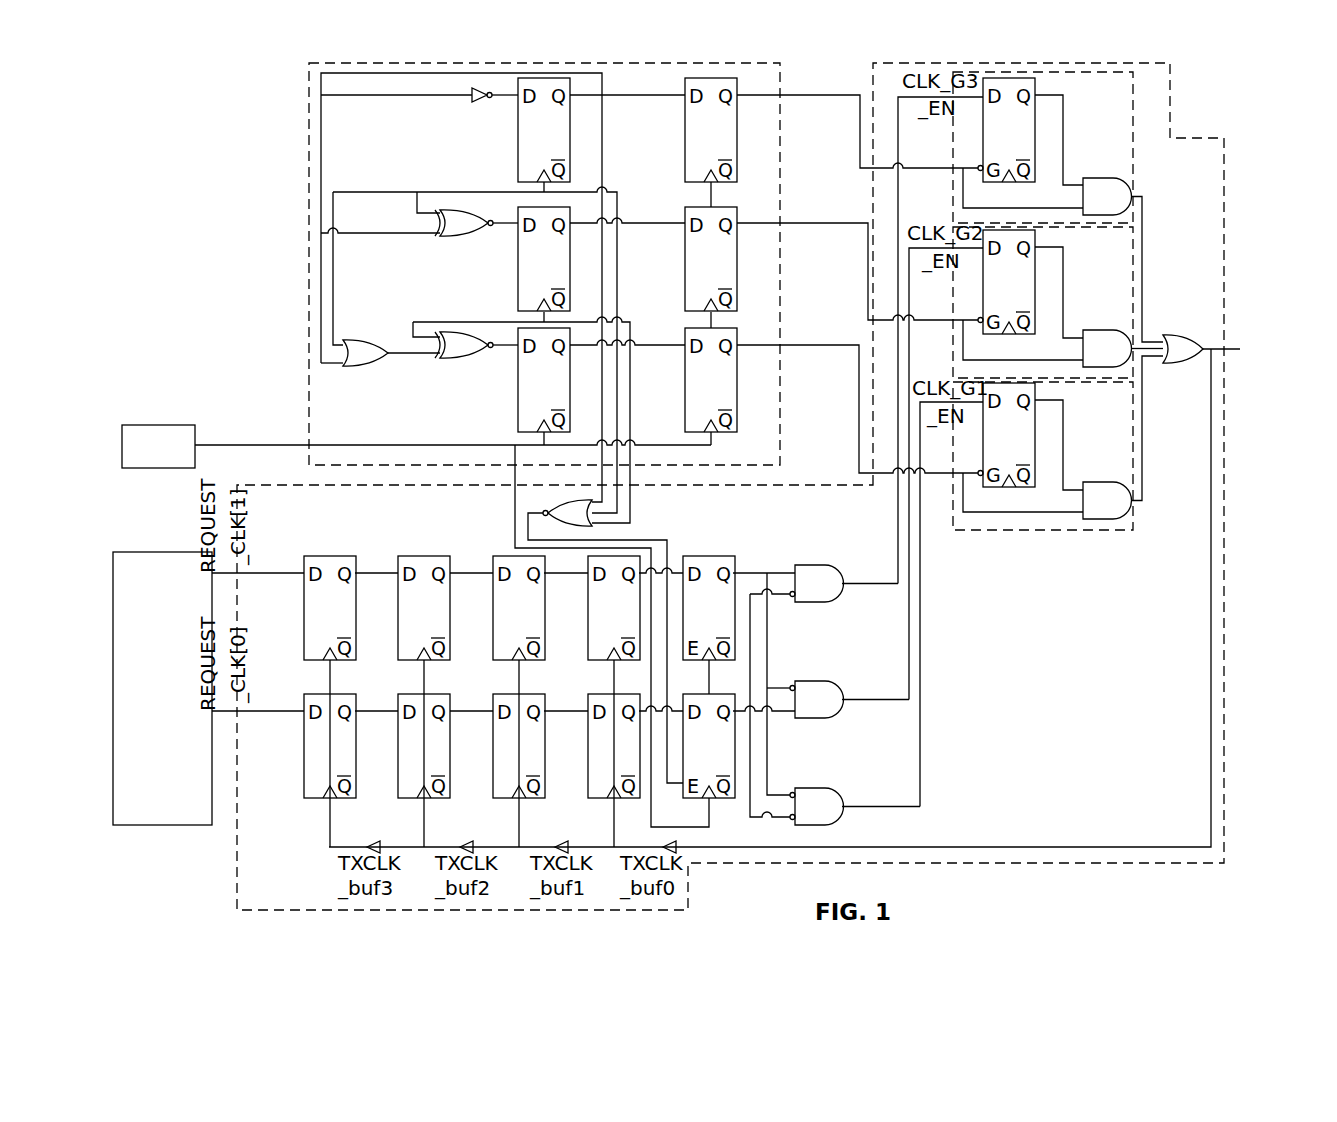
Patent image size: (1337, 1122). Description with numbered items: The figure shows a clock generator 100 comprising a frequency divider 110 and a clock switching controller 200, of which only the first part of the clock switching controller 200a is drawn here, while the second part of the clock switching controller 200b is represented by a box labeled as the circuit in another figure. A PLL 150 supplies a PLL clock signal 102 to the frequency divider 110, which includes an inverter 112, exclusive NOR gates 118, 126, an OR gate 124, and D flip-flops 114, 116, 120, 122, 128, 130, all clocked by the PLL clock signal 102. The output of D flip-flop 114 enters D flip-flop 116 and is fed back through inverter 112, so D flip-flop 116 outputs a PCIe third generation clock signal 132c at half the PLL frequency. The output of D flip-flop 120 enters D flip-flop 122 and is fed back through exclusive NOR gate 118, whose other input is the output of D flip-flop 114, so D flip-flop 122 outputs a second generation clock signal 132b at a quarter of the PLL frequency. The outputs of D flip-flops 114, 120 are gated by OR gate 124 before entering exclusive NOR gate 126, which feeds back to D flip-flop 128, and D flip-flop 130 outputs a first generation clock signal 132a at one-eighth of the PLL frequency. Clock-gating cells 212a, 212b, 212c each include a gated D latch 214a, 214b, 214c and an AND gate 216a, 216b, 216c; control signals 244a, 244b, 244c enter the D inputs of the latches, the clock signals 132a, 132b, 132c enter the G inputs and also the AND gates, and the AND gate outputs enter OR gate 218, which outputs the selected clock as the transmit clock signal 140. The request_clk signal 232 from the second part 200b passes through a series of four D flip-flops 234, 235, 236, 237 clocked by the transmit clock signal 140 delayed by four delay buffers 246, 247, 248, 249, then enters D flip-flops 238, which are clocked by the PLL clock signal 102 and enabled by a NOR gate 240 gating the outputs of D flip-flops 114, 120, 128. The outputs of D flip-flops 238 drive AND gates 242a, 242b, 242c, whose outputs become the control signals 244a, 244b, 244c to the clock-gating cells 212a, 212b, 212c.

The clock generator 100 is at (1316, 91).
The clock switching controller 200 is at (1216, 135).
The first part of the clock switching controller 200a is at (1152, 865).
The second part of the clock switching controller 200b is at (125, 552).
The PLL clock signal 102 is at (370, 445).
The frequency divider 110 is at (309, 238).
The inverter 112 is at (478, 105).
The D flip-flop 114 is at (518, 155).
The D flip-flop 116 is at (685, 155).
The exclusive NOR gate 118 is at (455, 237).
The D flip-flop 120 is at (518, 270).
The D flip-flop 122 is at (685, 270).
The OR gate 124 is at (370, 366).
The exclusive NOR gate 126 is at (470, 359).
The D flip-flop 128 is at (518, 413).
The D flip-flop 130 is at (690, 328).
The PCIe first generation clock signal 132a is at (800, 349).
The PCIe second generation clock signal 132b is at (806, 227).
The PCIe third generation clock signal 132c is at (800, 98).
The transmit clock signal 140 is at (1218, 352).
The PLL 150 is at (150, 425).
The clock-gating cell 212a is at (1133, 435).
The clock-gating cell 212b is at (1133, 278).
The clock-gating cell 212c is at (1133, 155).
The gated D latch 214a is at (1038, 385).
The gated D latch 214b is at (1038, 233).
The gated D latch 214c is at (1038, 83).
The AND gate 216a is at (1128, 517).
The AND gate 216b is at (1128, 365).
The AND gate 216c is at (1128, 212).
The OR gate 218 is at (1197, 338).
The request_clk signal 232 is at (272, 573).
The D flip-flop 234 is at (353, 556).
The D flip-flop 235 is at (432, 556).
The D flip-flop 236 is at (505, 556).
The D flip-flop 237 is at (600, 694).
The D flip-flops 238 is at (722, 555).
The NOR gate 240 is at (590, 528).
The AND gate 242a is at (805, 788).
The AND gate 242b is at (803, 681).
The AND gate 242c is at (805, 565).
The control signal 244a is at (866, 815).
The control signal 244b is at (856, 705).
The control signal 244c is at (843, 590).
The delay buffer 246 is at (680, 850).
The delay buffer 247 is at (555, 843).
The delay buffer 248 is at (462, 843).
The delay buffer 249 is at (367, 843).